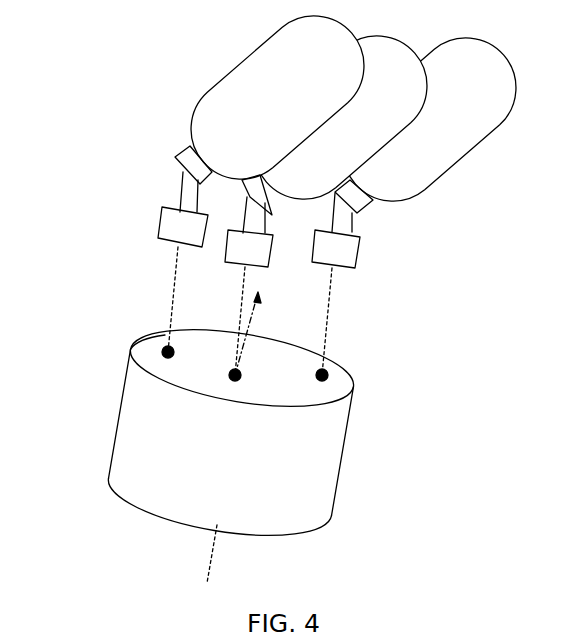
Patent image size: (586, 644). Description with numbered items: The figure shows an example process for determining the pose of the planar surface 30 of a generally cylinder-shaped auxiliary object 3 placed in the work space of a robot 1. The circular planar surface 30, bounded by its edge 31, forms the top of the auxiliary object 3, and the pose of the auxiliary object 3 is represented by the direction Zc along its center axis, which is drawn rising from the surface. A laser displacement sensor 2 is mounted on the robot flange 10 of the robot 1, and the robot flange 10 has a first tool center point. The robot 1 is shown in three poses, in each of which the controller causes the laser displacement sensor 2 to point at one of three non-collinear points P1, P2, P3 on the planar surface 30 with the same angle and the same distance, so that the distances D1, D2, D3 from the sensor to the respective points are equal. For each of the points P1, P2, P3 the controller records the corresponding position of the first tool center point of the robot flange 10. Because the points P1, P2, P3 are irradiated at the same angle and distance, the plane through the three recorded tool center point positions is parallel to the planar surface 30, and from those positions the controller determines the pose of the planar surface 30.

The robot 1 is at (247, 72).
The robot flange 10 is at (196, 160).
The laser displacement sensor 2 is at (177, 220).
The auxiliary object 3 is at (140, 392).
The planar surface 30 is at (150, 345).
The edge 31 is at (132, 347).
The distance D1 is at (337, 321).
The distance D2 is at (230, 321).
The distance D3 is at (185, 299).
The point P1 is at (315, 384).
The point P2 is at (245, 384).
The point P3 is at (182, 351).
The direction along center axis Zc is at (258, 328).